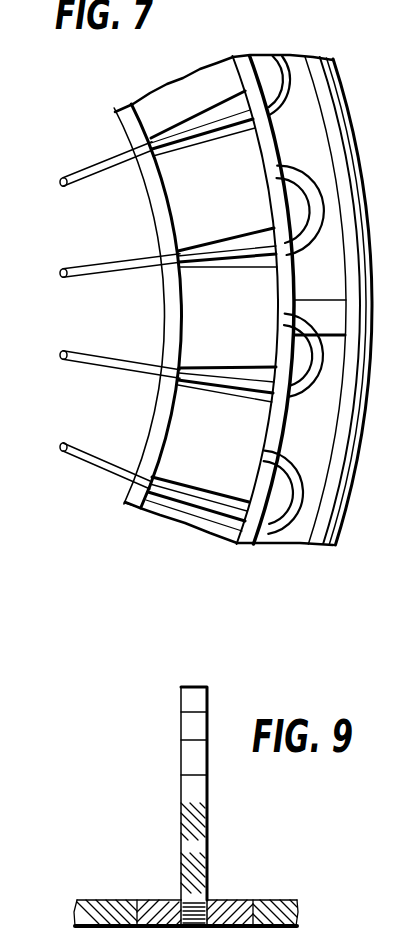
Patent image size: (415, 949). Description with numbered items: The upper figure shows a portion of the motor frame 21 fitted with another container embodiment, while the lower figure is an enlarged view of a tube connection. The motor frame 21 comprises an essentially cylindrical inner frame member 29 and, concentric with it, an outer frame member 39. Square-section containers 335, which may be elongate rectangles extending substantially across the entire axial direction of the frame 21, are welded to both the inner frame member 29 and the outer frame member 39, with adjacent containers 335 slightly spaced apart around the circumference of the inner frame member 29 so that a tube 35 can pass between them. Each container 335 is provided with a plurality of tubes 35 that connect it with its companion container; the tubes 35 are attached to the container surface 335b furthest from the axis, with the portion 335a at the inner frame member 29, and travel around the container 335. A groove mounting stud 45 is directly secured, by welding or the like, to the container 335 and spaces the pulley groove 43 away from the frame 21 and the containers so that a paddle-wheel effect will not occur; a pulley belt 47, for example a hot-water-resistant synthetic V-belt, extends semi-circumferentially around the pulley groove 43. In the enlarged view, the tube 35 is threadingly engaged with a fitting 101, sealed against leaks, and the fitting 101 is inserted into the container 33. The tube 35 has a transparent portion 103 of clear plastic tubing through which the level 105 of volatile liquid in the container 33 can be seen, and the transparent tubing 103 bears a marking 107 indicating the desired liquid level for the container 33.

In FIG. 7, the motor frame 21 is at (338, 73).
In FIG. 7, the inner frame member 29 is at (150, 437).
In FIG. 7, the outer frame member 39 is at (283, 437).
In FIG. 7, the pulley groove 43 is at (328, 137).
In FIG. 7, the pulley belt 47 is at (366, 254).
In FIG. 7, the groove mounting stud 45 is at (330, 317).
In FIG. 7, the tube 35 is at (268, 65).
In FIG. 9, the tube 35 is at (207, 698).
In FIG. 7, the container 335 is at (177, 184).
In FIG. 7, the bracket leg at inner rail 335a is at (175, 219).
In FIG. 7, the container surface 335b is at (258, 157).
In FIG. 9, the container 33 is at (277, 904).
In FIG. 9, the fitting 101 is at (234, 904).
In FIG. 9, the transparent portion 103 is at (240, 810).
In FIG. 9, the level 105 is at (194, 741).
In FIG. 9, the marking 107 is at (193, 776).